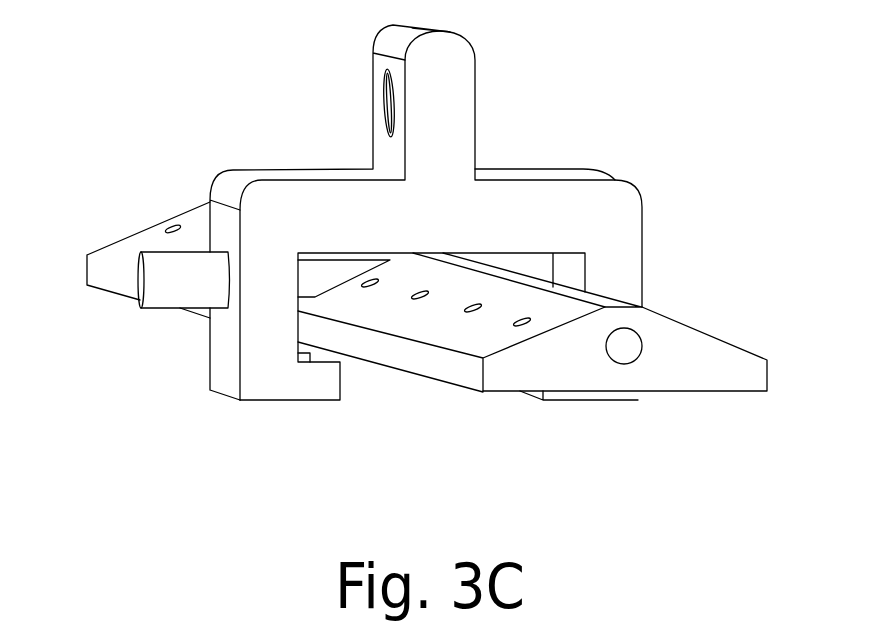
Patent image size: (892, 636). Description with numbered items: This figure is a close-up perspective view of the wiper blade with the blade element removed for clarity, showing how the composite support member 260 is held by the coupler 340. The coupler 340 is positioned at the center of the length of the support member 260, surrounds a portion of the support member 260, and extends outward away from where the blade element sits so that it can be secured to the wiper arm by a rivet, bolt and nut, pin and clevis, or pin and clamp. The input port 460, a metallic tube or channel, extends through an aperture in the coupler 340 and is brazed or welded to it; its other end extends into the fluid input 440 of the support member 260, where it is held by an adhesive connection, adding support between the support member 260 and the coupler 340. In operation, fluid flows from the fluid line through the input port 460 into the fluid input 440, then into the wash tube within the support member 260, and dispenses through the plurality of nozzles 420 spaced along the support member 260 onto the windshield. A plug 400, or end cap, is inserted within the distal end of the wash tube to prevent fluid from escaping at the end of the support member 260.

The coupler 340 is at (517, 207).
The support member 260 is at (688, 347).
The plug 400 is at (627, 351).
The nozzles 420 is at (476, 311).
The fluid input 440 is at (388, 261).
The input port 460 is at (168, 280).